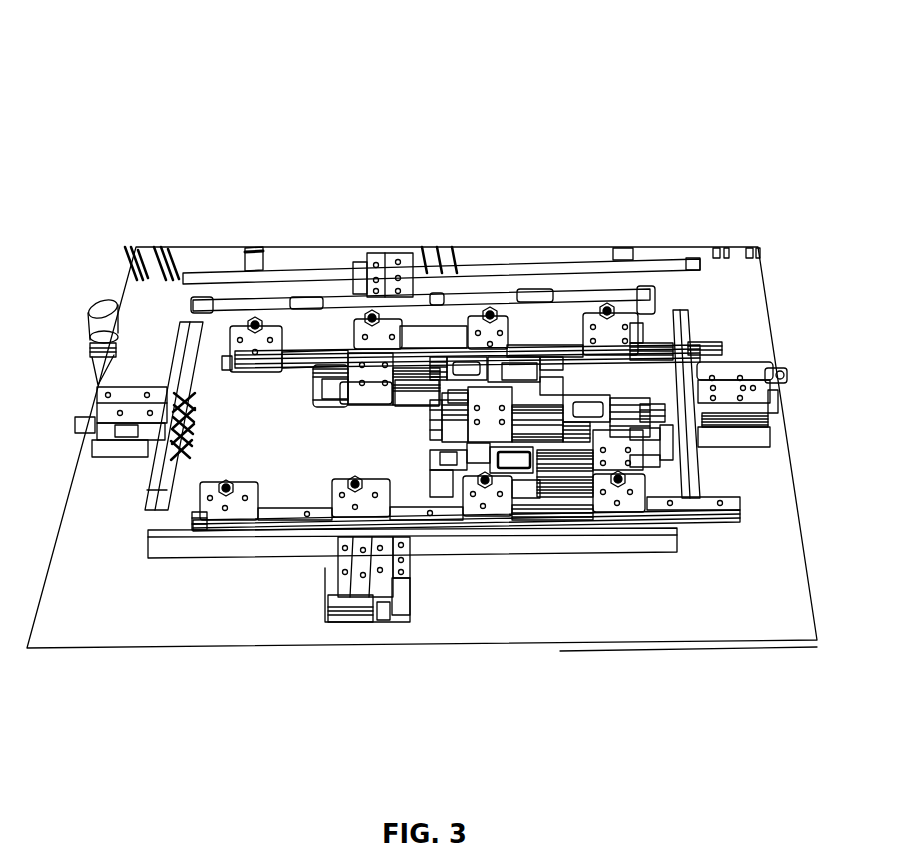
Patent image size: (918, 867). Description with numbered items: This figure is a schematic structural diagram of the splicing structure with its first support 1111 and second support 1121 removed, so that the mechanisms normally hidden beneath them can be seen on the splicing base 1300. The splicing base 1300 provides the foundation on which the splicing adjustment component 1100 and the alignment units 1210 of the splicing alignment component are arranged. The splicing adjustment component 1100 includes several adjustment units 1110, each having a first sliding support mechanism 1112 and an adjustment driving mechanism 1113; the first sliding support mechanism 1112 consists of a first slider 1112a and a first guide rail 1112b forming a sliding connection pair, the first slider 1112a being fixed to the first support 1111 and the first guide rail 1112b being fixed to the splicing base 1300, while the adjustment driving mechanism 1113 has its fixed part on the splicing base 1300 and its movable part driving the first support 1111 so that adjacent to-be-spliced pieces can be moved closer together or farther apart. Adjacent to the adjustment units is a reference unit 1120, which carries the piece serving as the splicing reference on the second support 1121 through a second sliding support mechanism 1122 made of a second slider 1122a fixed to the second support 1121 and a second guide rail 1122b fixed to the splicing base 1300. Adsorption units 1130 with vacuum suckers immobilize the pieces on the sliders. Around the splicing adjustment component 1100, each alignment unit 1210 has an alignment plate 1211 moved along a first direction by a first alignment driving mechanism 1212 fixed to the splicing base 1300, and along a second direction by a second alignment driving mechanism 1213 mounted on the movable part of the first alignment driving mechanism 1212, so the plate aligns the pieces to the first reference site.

The splicing adjustment component 1100 is at (431, 257).
The adjustment unit 1110 is at (501, 276).
The first support 1111 is at (373, 204).
The first sliding support mechanism 1112 is at (495, 291).
The first slider 1112a is at (388, 335).
The first guide rail 1112b is at (440, 352).
The adjustment driving mechanism 1113 is at (498, 372).
The reference unit 1120 is at (211, 282).
The second support 1121 is at (139, 311).
The second sliding support mechanism 1122 is at (250, 230).
The second slider 1122a is at (242, 327).
The second guide rail 1122b is at (300, 353).
The adsorption unit 1130 is at (671, 275).
The alignment unit 1210 is at (444, 632).
The alignment plate 1211 is at (257, 560).
The first alignment driving mechanism 1212 is at (382, 572).
The second alignment driving mechanism 1213 is at (368, 635).
The splicing base 1300 is at (535, 601).